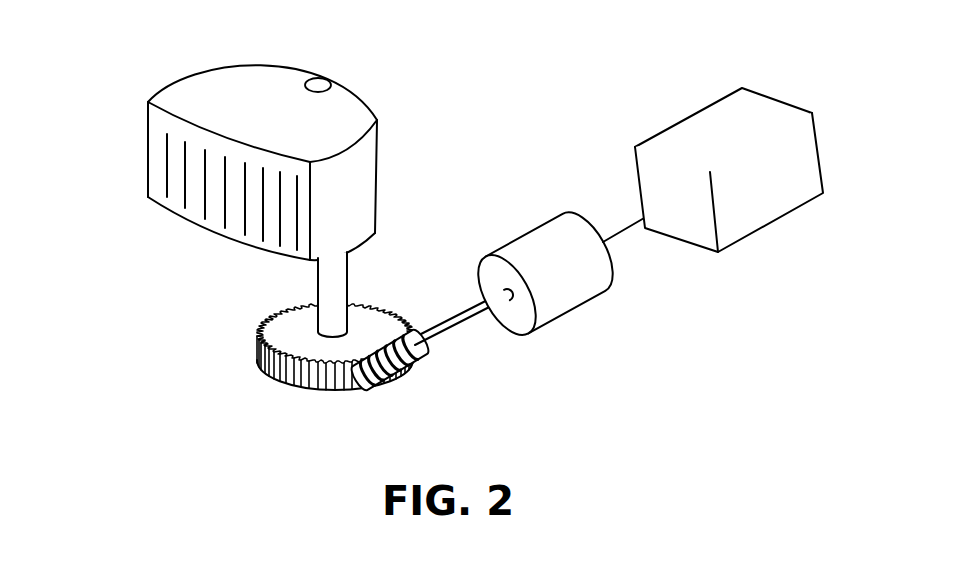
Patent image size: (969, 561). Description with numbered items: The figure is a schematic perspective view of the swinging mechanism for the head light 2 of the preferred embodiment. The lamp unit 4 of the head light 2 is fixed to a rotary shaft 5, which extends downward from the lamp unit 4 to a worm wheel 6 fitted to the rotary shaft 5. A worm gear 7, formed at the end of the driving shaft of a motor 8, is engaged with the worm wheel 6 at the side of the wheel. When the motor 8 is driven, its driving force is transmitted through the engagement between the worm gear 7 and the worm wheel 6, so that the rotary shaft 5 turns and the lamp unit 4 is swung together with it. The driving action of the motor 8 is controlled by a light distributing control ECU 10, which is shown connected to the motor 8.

The head light 2 is at (131, 154).
The lamp unit 4 is at (357, 183).
The rotary shaft 5 is at (325, 275).
The worm wheel 6 is at (255, 362).
The worm gear 7 is at (398, 368).
The motor 8 is at (570, 313).
The light distributing control ECU 10 is at (783, 100).